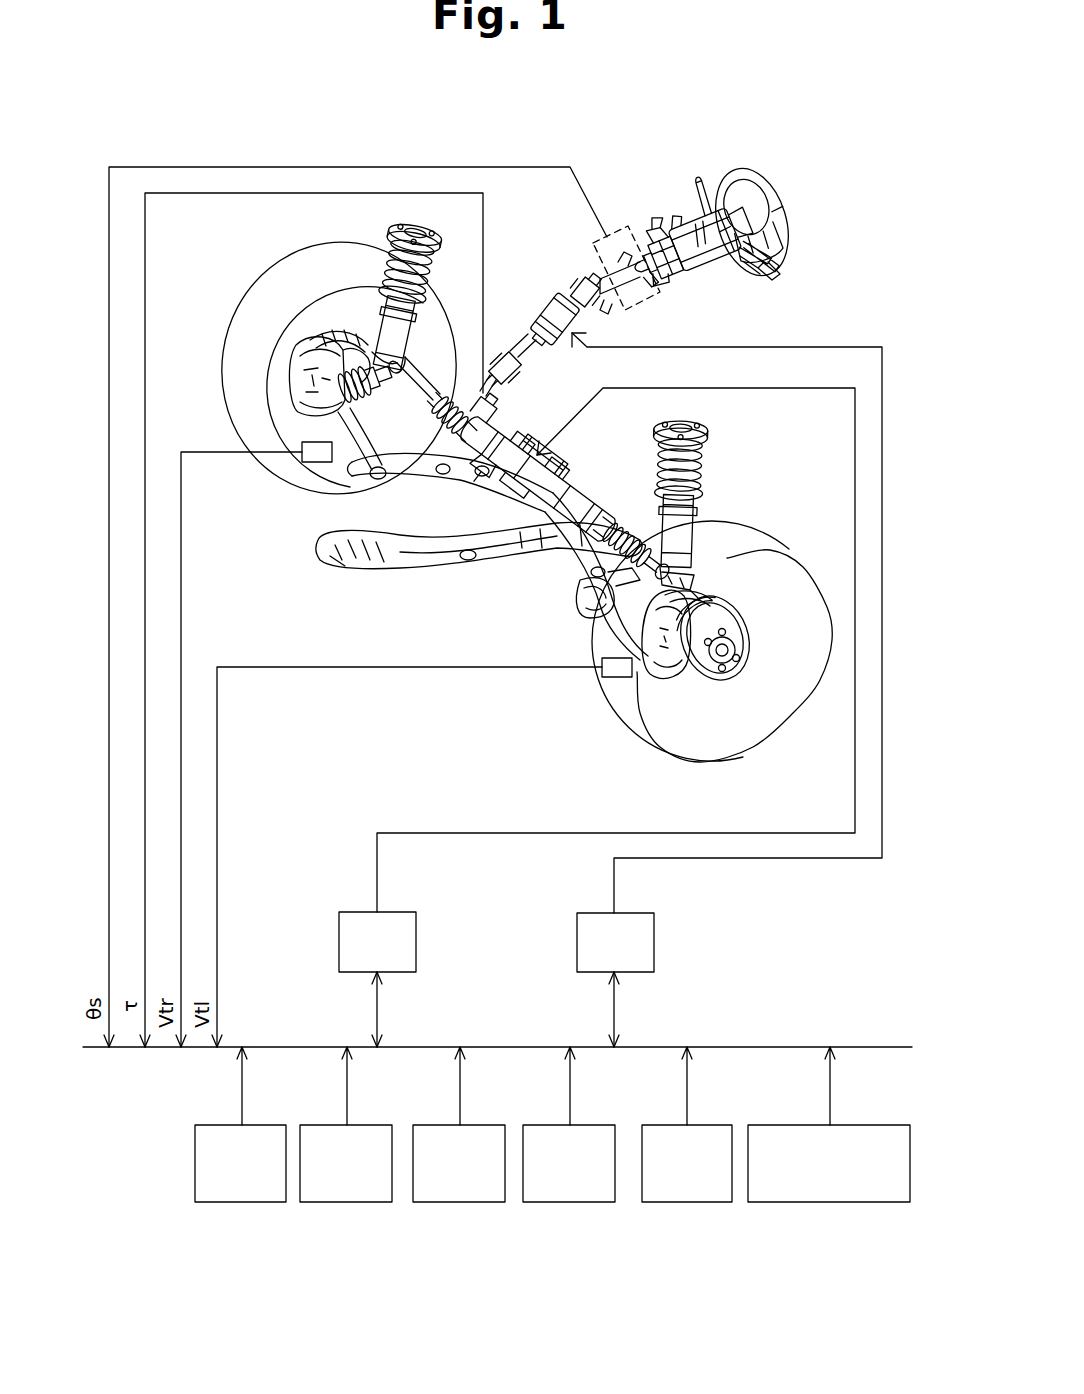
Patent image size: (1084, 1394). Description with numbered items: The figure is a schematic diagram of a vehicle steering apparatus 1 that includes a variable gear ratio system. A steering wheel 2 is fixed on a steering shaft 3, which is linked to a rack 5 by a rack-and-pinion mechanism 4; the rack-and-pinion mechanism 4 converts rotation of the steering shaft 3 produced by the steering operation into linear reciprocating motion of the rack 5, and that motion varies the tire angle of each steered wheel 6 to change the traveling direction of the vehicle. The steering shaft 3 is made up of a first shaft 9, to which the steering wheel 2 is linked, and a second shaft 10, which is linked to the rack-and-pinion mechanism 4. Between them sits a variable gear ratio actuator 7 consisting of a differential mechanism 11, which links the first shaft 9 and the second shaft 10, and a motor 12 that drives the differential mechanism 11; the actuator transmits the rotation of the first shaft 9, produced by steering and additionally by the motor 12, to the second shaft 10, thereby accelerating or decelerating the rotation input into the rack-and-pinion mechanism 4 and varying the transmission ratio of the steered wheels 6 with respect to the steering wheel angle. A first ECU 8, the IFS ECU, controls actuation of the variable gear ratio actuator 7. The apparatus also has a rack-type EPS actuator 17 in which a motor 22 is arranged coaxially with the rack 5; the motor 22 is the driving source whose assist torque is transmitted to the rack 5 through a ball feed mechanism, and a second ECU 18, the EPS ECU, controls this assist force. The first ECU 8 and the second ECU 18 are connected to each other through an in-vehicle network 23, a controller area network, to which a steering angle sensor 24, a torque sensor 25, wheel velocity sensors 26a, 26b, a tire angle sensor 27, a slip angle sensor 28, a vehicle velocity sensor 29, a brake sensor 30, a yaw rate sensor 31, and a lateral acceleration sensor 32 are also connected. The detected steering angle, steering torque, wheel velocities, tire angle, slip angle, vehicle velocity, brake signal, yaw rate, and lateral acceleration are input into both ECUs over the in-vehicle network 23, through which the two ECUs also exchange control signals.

The steering apparatus 1 is at (813, 131).
The steering wheel 2 is at (788, 220).
The steering shaft 3 is at (539, 447).
The rack-and-pinion mechanism 4 is at (500, 444).
The rack 5 is at (610, 518).
The steered wheel 6 is at (276, 290).
The variable gear ratio actuator 7 is at (551, 276).
The first ECU 8 is at (654, 942).
The first shaft 9 is at (583, 300).
The second shaft 10 is at (517, 362).
The differential mechanism 11 is at (532, 314).
The motor 12 is at (560, 310).
The EPS actuator 17 is at (577, 456).
The second ECU 18 is at (416, 942).
The motor 22 is at (474, 504).
The in-vehicle network 23 is at (852, 1046).
The steering angle sensor 24 is at (652, 312).
The torque sensor 25 is at (462, 378).
The wheel velocity sensor 26a is at (316, 462).
The wheel velocity sensor 26b is at (617, 677).
The tire angle sensor 27 is at (283, 1110).
The slip angle sensor 28 is at (388, 1110).
The vehicle velocity sensor 29 is at (503, 1110).
The brake sensor 30 is at (611, 1110).
The yaw rate sensor 31 is at (728, 1110).
The lateral acceleration sensor 32 is at (873, 1110).